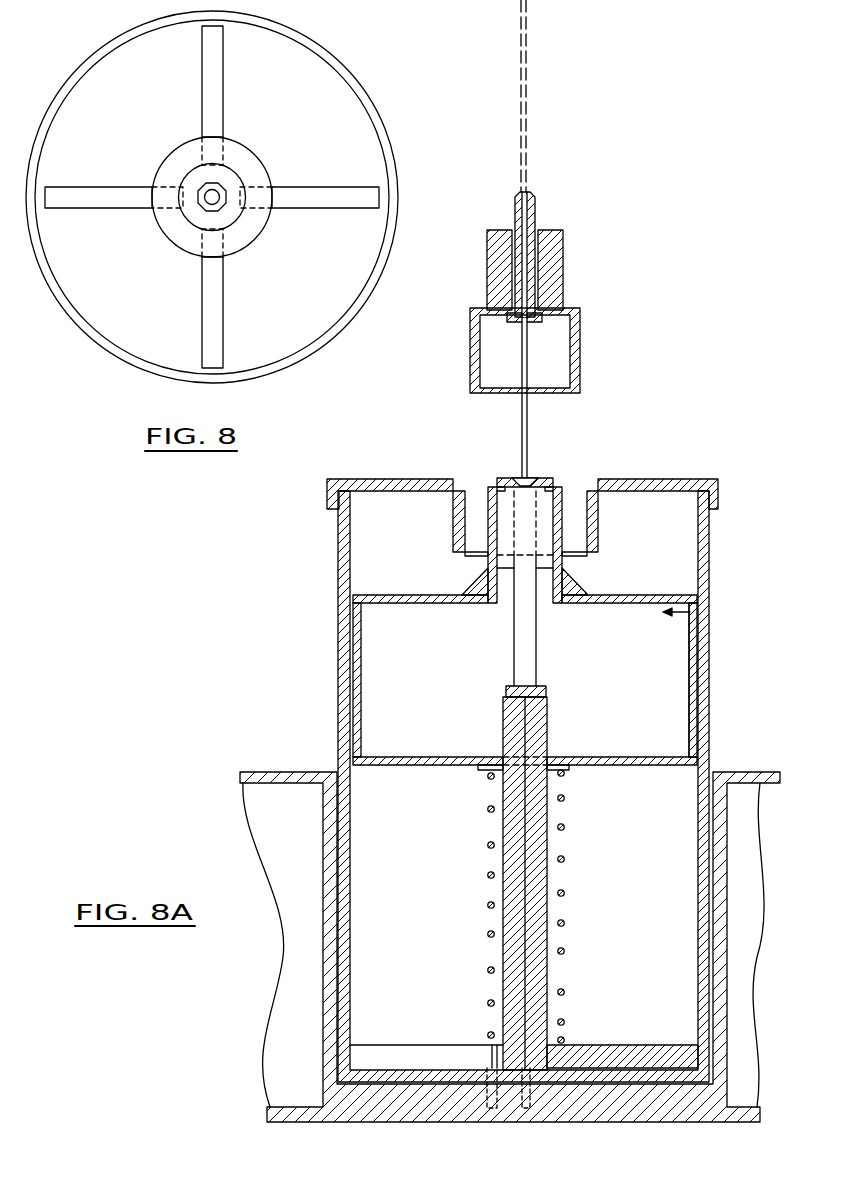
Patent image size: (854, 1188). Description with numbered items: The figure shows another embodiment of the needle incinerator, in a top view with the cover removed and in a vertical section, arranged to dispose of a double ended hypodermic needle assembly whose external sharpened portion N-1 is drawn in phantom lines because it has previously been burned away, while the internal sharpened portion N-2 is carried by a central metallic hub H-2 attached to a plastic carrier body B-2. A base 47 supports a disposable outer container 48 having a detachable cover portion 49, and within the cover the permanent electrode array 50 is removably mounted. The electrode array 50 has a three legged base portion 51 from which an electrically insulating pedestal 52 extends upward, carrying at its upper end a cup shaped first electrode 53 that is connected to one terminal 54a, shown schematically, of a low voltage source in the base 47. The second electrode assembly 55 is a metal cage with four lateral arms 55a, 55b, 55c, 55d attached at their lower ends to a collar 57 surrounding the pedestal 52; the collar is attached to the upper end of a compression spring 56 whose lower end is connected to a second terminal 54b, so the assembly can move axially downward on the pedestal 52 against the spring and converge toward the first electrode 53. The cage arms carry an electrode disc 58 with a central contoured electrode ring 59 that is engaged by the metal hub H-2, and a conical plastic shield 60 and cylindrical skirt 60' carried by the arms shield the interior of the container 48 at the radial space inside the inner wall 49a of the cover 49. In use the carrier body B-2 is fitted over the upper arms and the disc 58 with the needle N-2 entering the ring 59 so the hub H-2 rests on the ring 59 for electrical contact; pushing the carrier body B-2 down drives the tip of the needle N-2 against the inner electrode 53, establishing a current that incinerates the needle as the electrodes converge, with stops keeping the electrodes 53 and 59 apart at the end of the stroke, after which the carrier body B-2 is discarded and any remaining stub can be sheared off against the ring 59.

In FIG. 8A, the base 47 is at (730, 772).
In FIG. 8, the outer container 48 is at (409, 100).
In FIG. 8A, the outer container 48 is at (337, 706).
In FIG. 8A, the cover portion 49 is at (667, 480).
In FIG. 8A, the inner wall 49a is at (465, 510).
In FIG. 8A, the electrode array 50 is at (693, 620).
In FIG. 8A, the three legged base portion 51 is at (632, 1048).
In FIG. 8A, the pedestal 52 is at (500, 868).
In FIG. 8A, the first electrode 53 is at (502, 684).
In FIG. 8A, the terminal 54a is at (480, 1083).
In FIG. 8A, the second terminal 54b is at (523, 1073).
In FIG. 8A, the second electrode assembly 55 is at (657, 591).
In FIG. 8, the lateral arm 55a is at (140, 188).
In FIG. 8A, the lateral arm 55a is at (362, 650).
In FIG. 8, the lateral arm 55b is at (212, 83).
In FIG. 8A, the lateral arm 55b is at (537, 653).
In FIG. 8, the lateral arm 55c is at (359, 210).
In FIG. 8A, the lateral arm 55c is at (688, 662).
In FIG. 8, the lateral arm 55d is at (210, 312).
In FIG. 8A, the compression spring 56 is at (563, 858).
In FIG. 8A, the collar 57 is at (568, 768).
In FIG. 8, the electrode disc 58 is at (232, 174).
In FIG. 8A, the electrode disc 58 is at (542, 478).
In FIG. 8, the electrode ring 59 is at (228, 216).
In FIG. 8A, the electrode ring 59 is at (515, 476).
In FIG. 8, the conical plastic shield 60 is at (211, 216).
In FIG. 8A, the conical plastic shield 60 is at (456, 575).
In FIG. 8A, the cylindrical skirt 60' is at (578, 575).
In FIG. 8A, the external sharpened portion N-1 is at (528, 78).
In FIG. 8A, the internal sharpened portion N-2 is at (527, 417).
In FIG. 8A, the central metallic hub H-2 is at (537, 198).
In FIG. 8A, the plastic carrier body B-2 is at (565, 272).